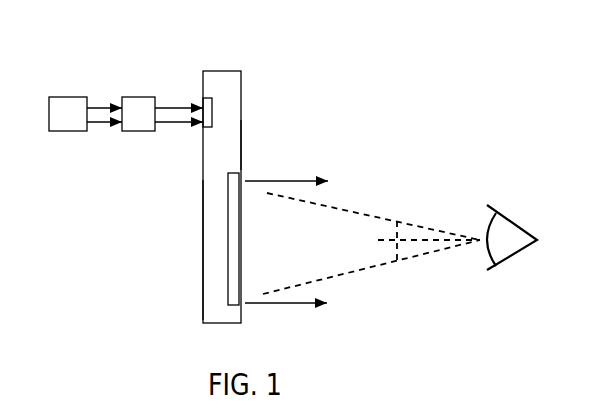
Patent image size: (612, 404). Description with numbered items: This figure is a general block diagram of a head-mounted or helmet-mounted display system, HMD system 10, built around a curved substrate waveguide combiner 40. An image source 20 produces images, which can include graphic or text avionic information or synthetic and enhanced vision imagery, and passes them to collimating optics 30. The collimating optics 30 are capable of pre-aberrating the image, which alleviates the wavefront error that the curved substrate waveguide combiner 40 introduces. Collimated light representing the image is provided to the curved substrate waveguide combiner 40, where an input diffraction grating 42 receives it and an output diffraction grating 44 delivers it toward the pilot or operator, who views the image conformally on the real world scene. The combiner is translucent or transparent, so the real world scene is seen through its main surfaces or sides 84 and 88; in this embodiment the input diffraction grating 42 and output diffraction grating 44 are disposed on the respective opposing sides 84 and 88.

The HMD system 10 is at (278, 47).
The image source 20 is at (68, 102).
The collimating optics 30 is at (138, 105).
The curved substrate waveguide combiner 40 is at (210, 167).
The input diffraction grating 42 is at (207, 103).
The output diffraction grating 44 is at (233, 258).
The main surface or side 84 is at (204, 248).
The main surface or side 88 is at (242, 160).